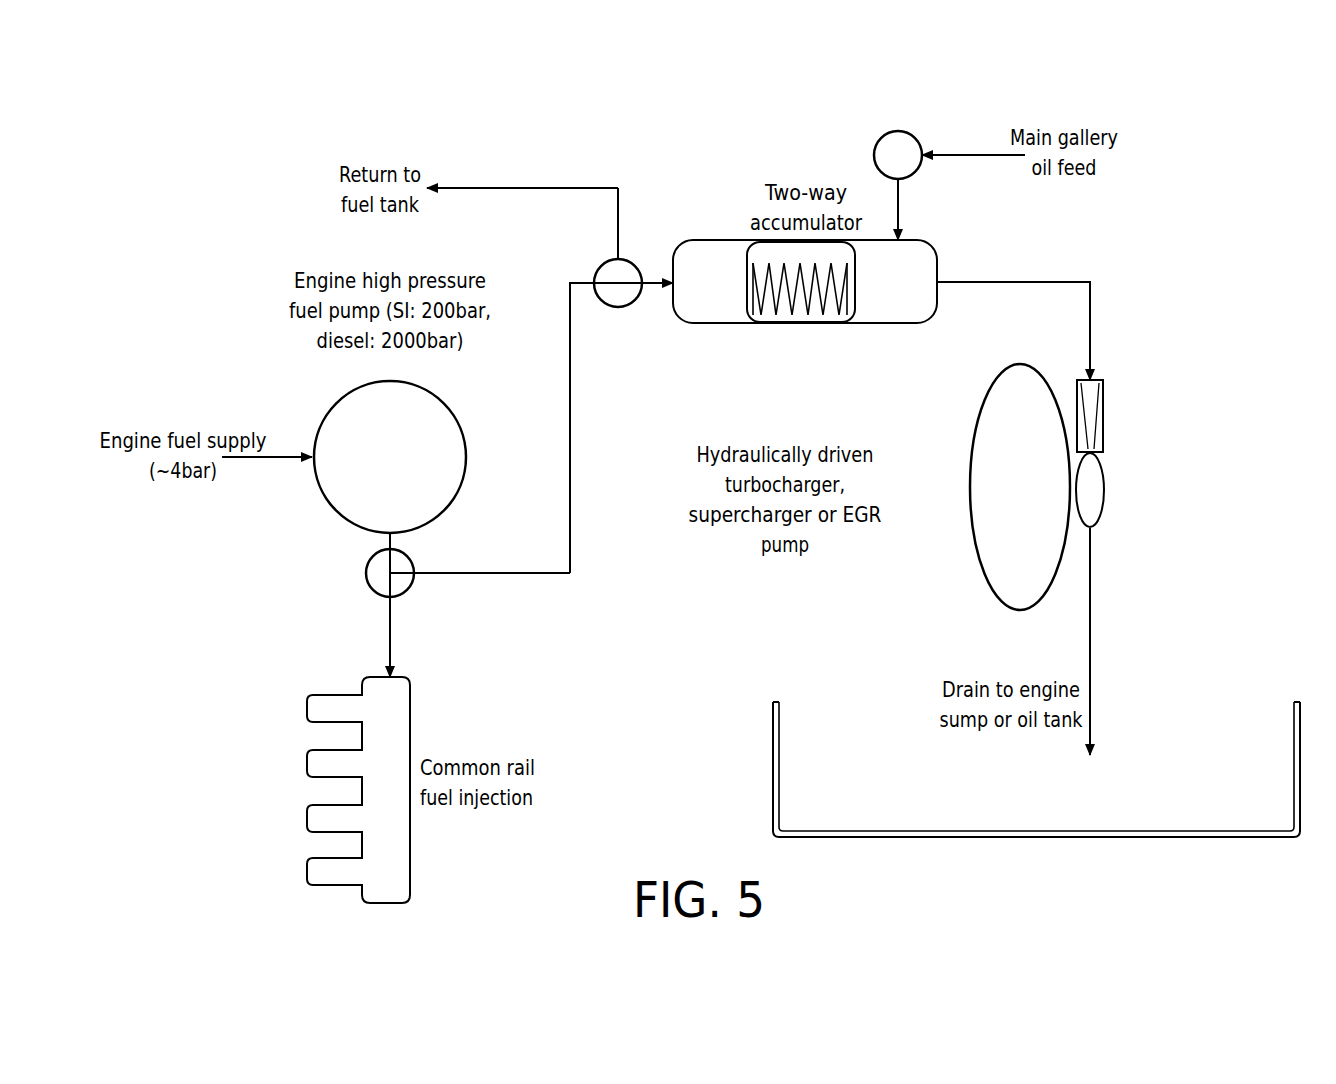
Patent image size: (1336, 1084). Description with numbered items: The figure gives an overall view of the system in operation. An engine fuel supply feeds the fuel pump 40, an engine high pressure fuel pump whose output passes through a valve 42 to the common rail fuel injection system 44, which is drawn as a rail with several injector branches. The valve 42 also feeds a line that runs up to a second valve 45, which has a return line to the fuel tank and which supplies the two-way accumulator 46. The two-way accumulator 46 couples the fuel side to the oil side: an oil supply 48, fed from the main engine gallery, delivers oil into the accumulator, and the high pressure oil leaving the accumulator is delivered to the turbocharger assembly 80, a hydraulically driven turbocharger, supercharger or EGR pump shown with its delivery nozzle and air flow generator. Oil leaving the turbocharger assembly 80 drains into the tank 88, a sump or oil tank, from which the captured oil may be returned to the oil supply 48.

The fuel pump 40 is at (466, 457).
The valve (or switch) 42 is at (412, 586).
The common rail fuel injection system 44 is at (410, 848).
The valve (or switch) 45 is at (616, 307).
The two-way accumulator 46 is at (893, 323).
The oil supply 48 is at (898, 131).
The turbocharger assembly 80 is at (1203, 467).
The tank 88 is at (1297, 712).